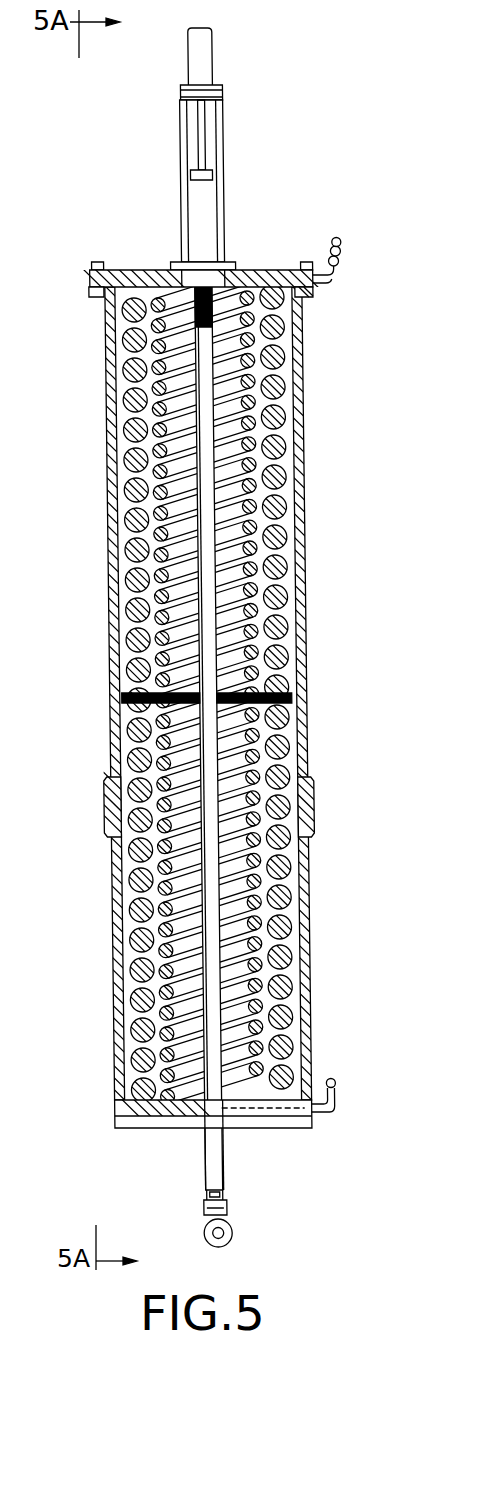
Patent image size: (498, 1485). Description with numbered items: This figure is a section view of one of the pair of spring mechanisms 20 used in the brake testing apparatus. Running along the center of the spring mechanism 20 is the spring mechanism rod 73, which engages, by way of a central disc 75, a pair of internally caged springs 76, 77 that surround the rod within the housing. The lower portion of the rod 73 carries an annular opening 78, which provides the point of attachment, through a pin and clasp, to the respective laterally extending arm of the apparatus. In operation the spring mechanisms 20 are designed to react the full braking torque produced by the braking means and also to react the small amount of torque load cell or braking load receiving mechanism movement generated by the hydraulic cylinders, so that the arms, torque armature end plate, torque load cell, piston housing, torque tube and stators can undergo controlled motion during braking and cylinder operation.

The spring mechanism 20 is at (86, 545).
The spring mechanism rod 73 is at (204, 781).
The central disc 75 is at (288, 697).
The internally caged spring 76 is at (281, 452).
The internally caged spring 77 is at (279, 405).
The annular opening 78 is at (217, 1223).